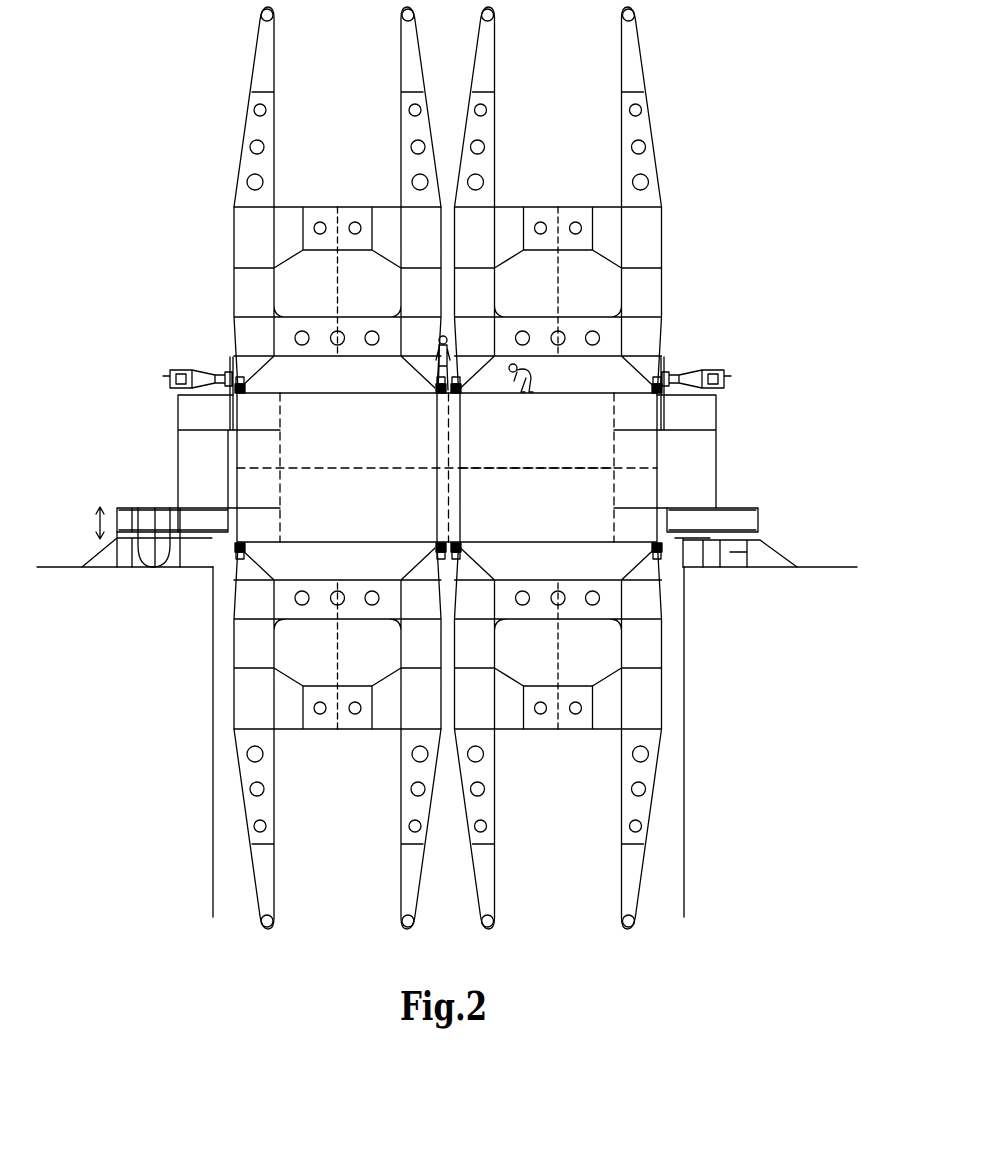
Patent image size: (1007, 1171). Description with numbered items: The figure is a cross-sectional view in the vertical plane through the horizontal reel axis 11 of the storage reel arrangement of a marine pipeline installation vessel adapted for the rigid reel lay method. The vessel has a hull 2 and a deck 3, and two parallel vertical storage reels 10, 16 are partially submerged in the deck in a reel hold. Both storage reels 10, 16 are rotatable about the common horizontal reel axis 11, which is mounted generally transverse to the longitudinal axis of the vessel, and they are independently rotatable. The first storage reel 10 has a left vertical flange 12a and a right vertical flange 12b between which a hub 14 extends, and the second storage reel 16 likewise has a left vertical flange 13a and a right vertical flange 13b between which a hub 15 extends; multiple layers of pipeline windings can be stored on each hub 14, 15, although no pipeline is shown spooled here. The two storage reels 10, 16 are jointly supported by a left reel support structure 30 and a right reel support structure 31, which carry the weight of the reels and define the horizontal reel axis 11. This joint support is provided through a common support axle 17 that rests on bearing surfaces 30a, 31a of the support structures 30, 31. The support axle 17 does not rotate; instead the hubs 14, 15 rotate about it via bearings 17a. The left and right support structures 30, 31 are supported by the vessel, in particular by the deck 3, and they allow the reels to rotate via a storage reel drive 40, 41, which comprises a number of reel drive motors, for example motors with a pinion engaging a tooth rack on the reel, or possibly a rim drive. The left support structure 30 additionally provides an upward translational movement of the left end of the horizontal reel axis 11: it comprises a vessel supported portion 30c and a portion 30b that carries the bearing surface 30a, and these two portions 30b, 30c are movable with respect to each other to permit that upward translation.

The hull 2 is at (485, 742).
The deck 3 is at (822, 567).
The storage reel 10 is at (218, 90).
The horizontal reel axis 11 is at (494, 470).
The left vertical flange 12a is at (263, 48).
The right vertical flange 12b is at (408, 70).
The left vertical flange 13a is at (485, 42).
The right vertical flange 13b is at (630, 70).
The hub 14 is at (297, 205).
The hub 15 is at (515, 207).
The storage reel 16 is at (686, 119).
The common support axle 17 is at (447, 467).
The bearings 17a is at (241, 391).
The left reel support structure 30 is at (126, 440).
The bearing surface 30a is at (195, 508).
The support structure portion 30b is at (124, 520).
The vessel supported portion 30c is at (130, 555).
The right reel support structure 31 is at (781, 436).
The bearing surface 31a is at (722, 518).
The storage reel drive 40 is at (177, 347).
The storage reel drive 41 is at (708, 350).